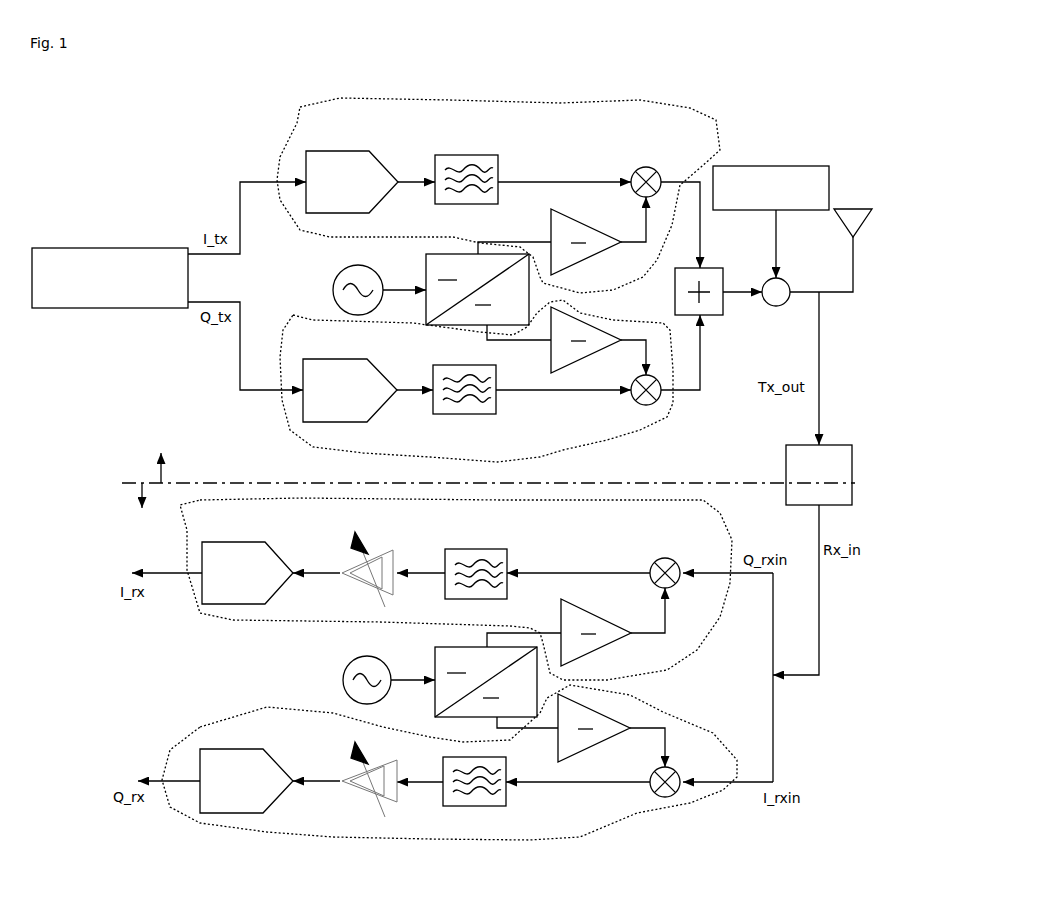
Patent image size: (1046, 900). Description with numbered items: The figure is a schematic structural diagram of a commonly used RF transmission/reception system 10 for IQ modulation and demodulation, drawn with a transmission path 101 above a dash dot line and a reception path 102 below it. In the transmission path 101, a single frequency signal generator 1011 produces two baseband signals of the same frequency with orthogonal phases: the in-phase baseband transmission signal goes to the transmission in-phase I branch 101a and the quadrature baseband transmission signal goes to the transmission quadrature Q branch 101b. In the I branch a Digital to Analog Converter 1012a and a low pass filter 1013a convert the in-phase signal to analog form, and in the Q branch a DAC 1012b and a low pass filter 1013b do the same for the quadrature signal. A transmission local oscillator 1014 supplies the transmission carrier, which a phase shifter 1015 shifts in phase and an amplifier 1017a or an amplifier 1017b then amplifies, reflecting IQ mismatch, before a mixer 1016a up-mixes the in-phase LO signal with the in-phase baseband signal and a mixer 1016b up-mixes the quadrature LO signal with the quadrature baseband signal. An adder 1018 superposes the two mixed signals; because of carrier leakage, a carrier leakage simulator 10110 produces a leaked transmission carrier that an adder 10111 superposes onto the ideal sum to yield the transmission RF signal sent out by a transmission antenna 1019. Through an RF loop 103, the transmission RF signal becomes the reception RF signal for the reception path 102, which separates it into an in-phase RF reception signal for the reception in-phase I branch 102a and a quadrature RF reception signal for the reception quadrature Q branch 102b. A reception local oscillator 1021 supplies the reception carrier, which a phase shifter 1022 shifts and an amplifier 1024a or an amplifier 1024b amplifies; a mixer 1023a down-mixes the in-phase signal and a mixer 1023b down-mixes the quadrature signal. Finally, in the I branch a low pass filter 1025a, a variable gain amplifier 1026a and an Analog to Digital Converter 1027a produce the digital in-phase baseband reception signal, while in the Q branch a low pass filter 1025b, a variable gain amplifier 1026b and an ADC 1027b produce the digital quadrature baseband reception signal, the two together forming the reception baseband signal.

The RF transmission/reception system 10 is at (247, 101).
The single frequency signal generator 1011 is at (130, 248).
The transmission path 101 is at (165, 456).
The reception path 102 is at (146, 507).
The transmission in-phase I branch 101a is at (628, 103).
The transmission quadrature Q branch 101b is at (612, 440).
The Digital to Analog Converter 1012a is at (337, 151).
The DAC 1012b is at (334, 359).
The Low pass Filter 1013a is at (468, 155).
The low pass filter 1013b is at (445, 365).
The transmission local oscillator 1014 is at (344, 276).
The phase shifter 1015 is at (445, 254).
The mixer 1016a is at (645, 167).
The mixer 1016b is at (648, 403).
The amplifier 1017a is at (560, 215).
The amplifier 1017b is at (585, 320).
The adder 1018 is at (708, 268).
The carrier leakage simulator 10110 is at (750, 166).
The adder 10111 is at (786, 282).
The transmission antenna 1019 is at (868, 190).
The RF loop 103 is at (822, 445).
The reception in-phase I branch 102a is at (734, 540).
The reception quadrature Q branch 102b is at (670, 808).
The reception local oscillator 1021 is at (351, 665).
The phase shifter 1022 is at (452, 647).
The mixer 1023a is at (667, 558).
The mixer 1023b is at (653, 769).
The amplifier 1024a is at (622, 604).
The amplifier 1024b is at (605, 718).
The low pass filter 1025a is at (478, 549).
The low pass filter 1025b is at (506, 788).
The variable gain amplifier 1026a is at (383, 546).
The variable gain amplifier 1026b is at (384, 755).
The Analog to Digital Converter 1027a is at (235, 542).
The ADC 1027b is at (233, 749).